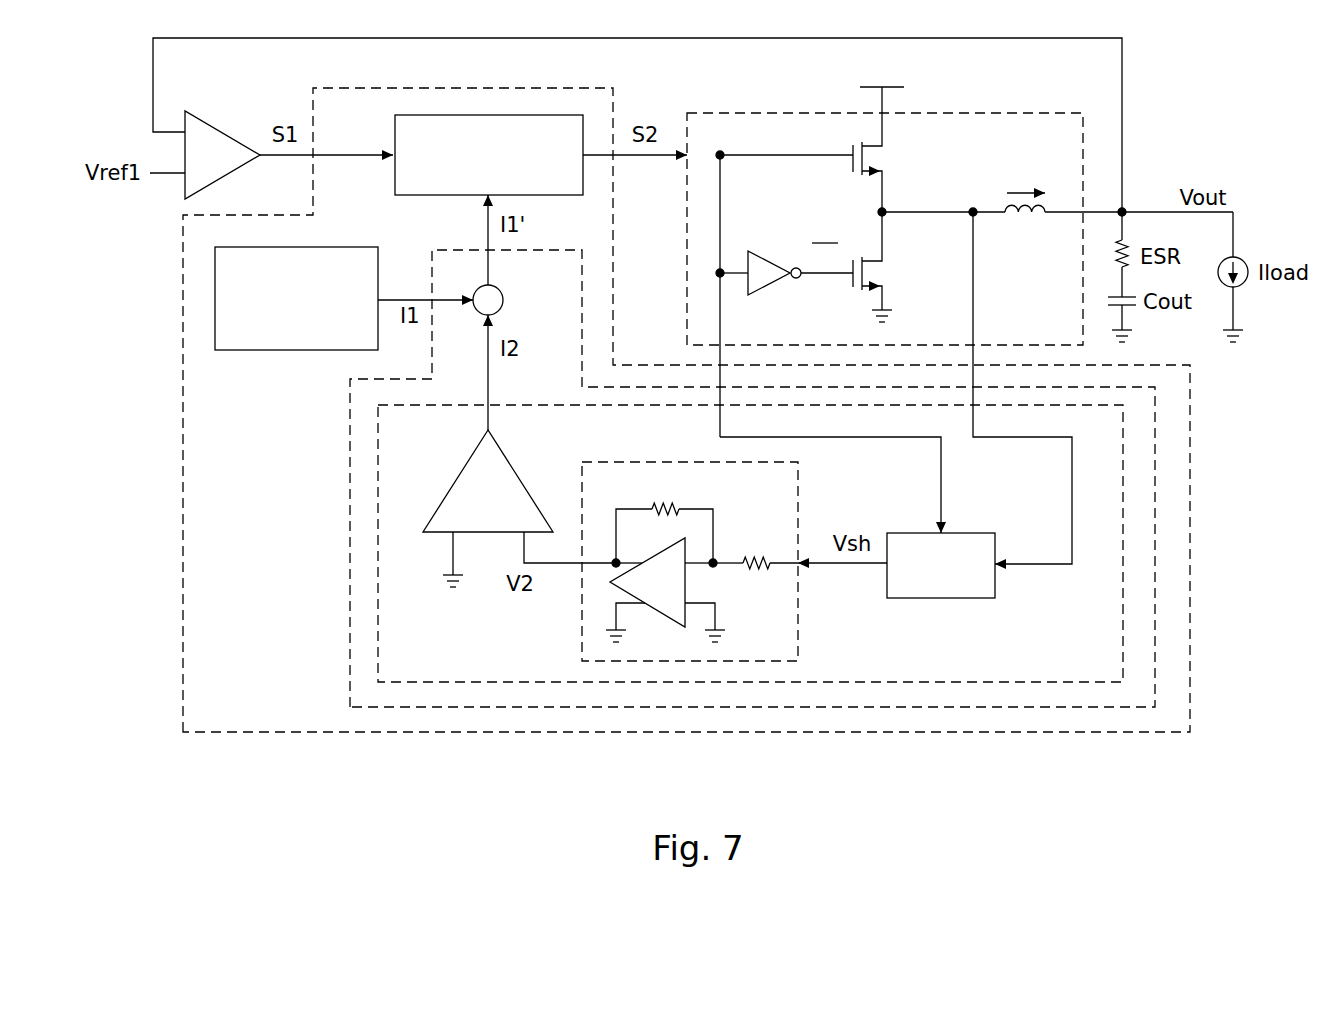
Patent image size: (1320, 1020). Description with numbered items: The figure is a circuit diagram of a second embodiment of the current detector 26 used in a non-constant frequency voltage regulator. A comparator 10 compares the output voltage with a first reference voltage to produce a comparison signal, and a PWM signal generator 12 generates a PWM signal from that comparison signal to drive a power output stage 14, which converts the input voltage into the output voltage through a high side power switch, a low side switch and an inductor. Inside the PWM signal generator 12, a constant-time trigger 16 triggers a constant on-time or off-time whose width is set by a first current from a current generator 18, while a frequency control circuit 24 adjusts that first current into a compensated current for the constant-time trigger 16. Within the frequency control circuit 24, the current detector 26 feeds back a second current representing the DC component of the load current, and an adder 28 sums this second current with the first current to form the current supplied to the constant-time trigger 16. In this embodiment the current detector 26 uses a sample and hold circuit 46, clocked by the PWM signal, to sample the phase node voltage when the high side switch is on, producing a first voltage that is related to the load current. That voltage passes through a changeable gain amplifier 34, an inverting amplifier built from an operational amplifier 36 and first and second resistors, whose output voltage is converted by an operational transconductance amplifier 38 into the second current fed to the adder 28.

The comparator 10 is at (217, 125).
The PWM signal generator 12 is at (183, 445).
The power output stage 14 is at (993, 113).
The constant-time trigger 16 is at (430, 196).
The current generator 18 is at (295, 350).
The frequency control circuit 24 is at (1157, 543).
The current detector 26 is at (378, 558).
The adder 28 is at (505, 303).
The changeable gain amplifier 34 is at (800, 508).
The operational amplifier 36 is at (688, 584).
The operational transconductance amplifier 38 is at (458, 478).
The sample and hold circuit 46 is at (942, 600).